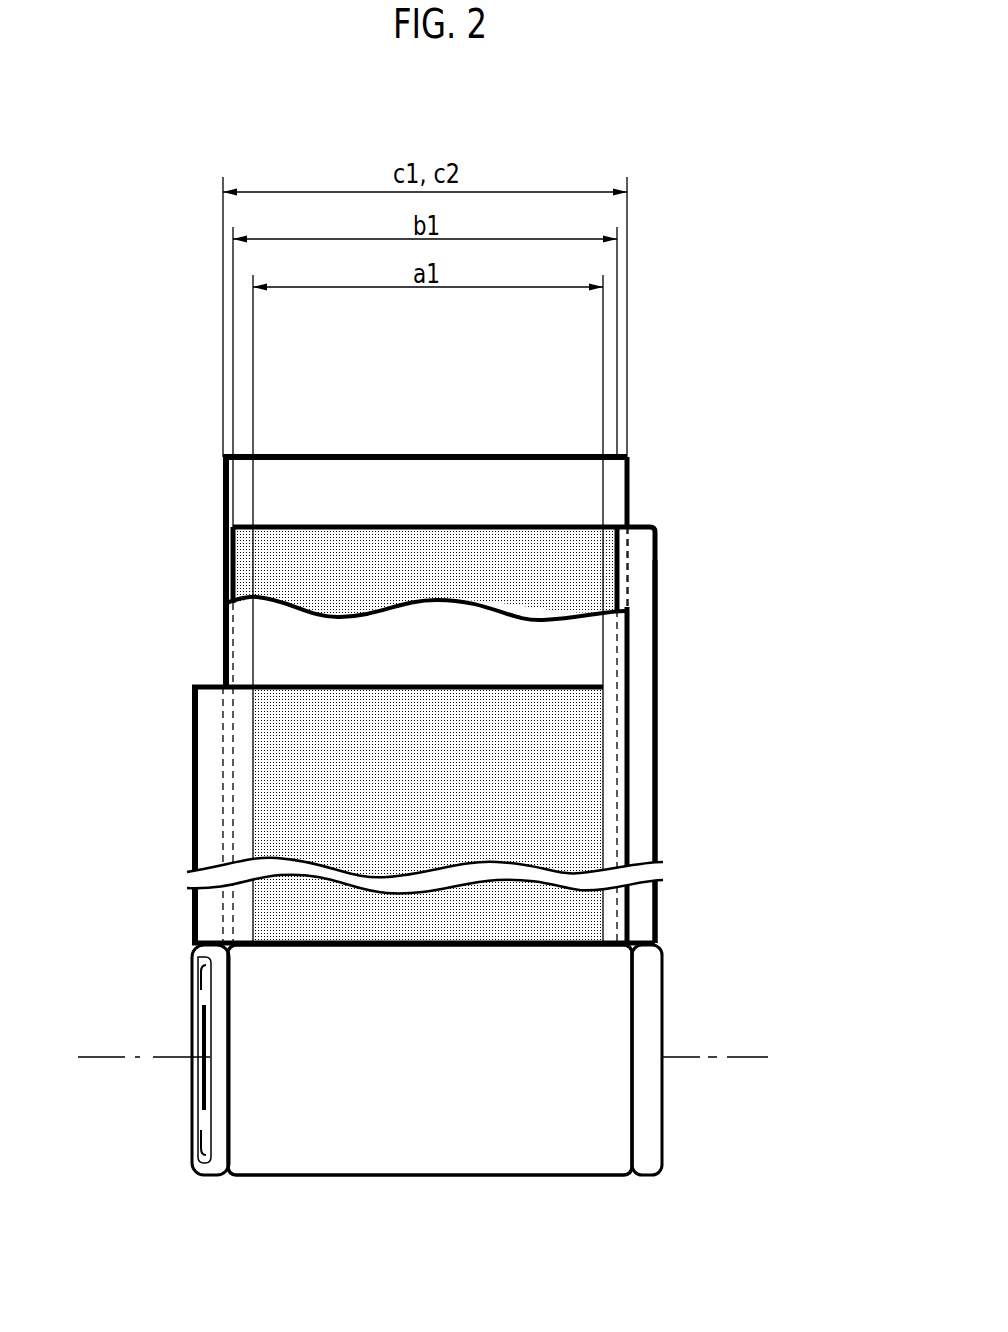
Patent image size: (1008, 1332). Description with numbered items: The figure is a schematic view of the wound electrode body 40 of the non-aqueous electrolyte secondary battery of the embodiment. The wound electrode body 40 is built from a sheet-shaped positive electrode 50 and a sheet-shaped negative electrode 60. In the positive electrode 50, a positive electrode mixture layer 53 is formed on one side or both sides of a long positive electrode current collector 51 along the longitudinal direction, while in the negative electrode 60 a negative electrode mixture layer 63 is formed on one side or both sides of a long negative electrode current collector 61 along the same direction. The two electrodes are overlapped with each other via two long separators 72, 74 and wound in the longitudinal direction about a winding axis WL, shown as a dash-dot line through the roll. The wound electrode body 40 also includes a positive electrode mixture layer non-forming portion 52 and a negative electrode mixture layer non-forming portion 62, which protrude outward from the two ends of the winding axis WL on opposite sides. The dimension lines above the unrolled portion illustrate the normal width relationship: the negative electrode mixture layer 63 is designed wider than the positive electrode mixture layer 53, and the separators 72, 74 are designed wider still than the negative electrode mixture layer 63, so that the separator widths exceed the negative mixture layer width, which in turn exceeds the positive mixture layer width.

The wound electrode body 40 is at (468, 1152).
The positive electrode 50 is at (183, 728).
The positive electrode current collector 51 is at (190, 815).
The positive electrode mixture layer non-forming portion 52 is at (202, 805).
The positive electrode mixture layer 53 is at (288, 800).
The negative electrode 60 is at (662, 541).
The negative electrode current collector 61 is at (658, 740).
The negative electrode mixture layer non-forming portion 62 is at (638, 599).
The negative electrode mixture layer 63 is at (540, 545).
The separator 72 is at (233, 487).
The separator 74 is at (232, 640).
The winding axis WL is at (757, 1057).